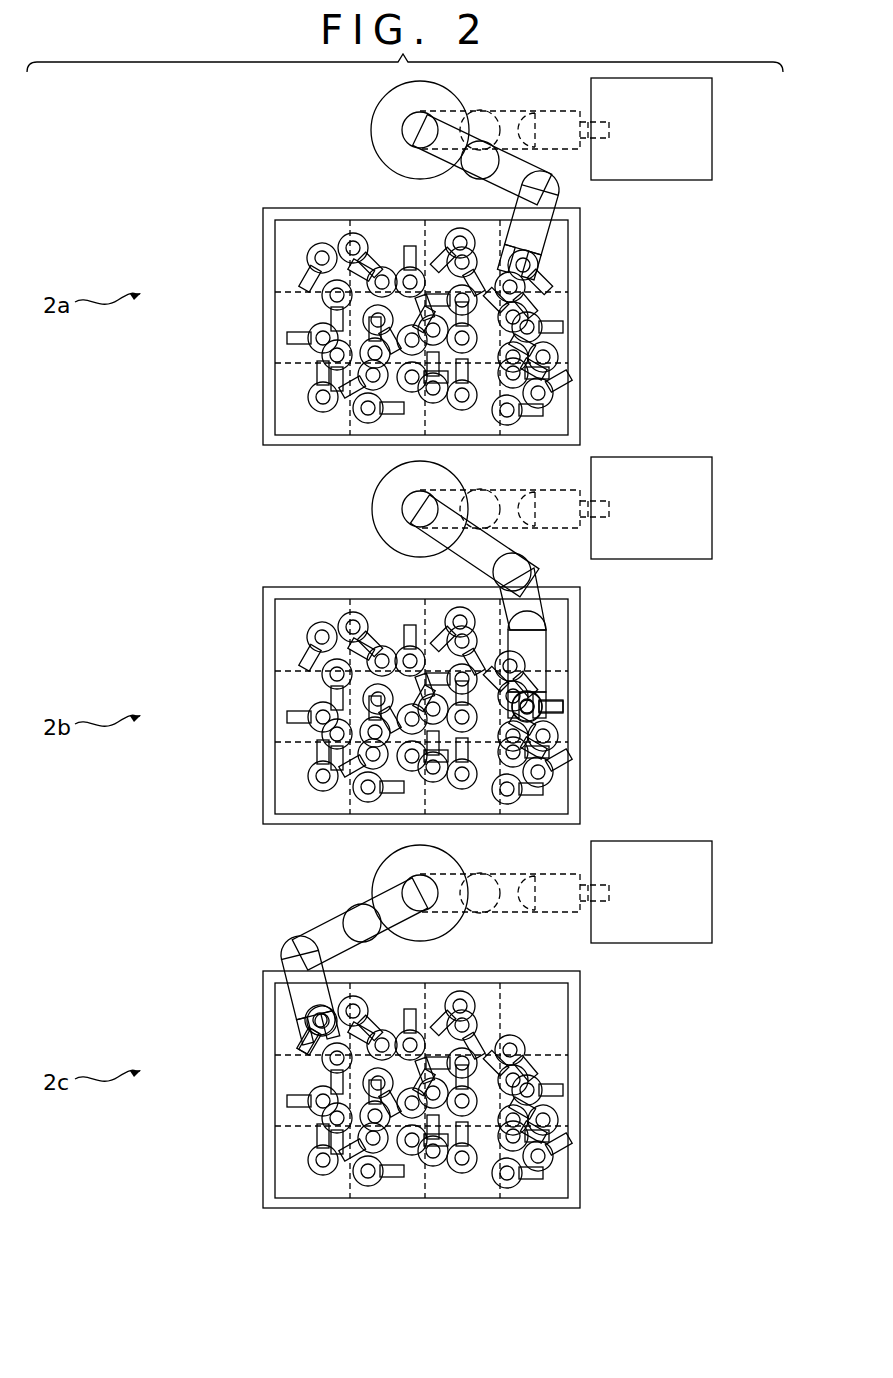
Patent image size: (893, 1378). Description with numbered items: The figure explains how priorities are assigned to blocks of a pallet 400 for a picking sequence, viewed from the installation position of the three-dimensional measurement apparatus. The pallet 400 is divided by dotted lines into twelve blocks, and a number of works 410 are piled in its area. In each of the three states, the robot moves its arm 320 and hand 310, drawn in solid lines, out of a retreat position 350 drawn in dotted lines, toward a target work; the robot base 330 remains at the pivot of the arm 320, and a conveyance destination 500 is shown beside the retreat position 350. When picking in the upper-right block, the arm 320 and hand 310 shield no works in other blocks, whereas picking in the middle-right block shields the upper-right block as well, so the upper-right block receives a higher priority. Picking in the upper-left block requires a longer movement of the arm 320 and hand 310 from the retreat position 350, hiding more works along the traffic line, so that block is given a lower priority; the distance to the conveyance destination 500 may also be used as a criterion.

The hand 310 is at (556, 230).
The arm 320 is at (478, 188).
The base 330 is at (372, 127).
The retreat position 350 is at (507, 111).
The pallet 400 is at (263, 262).
The works 410 is at (308, 397).
The conveyance destination 500 is at (713, 116).